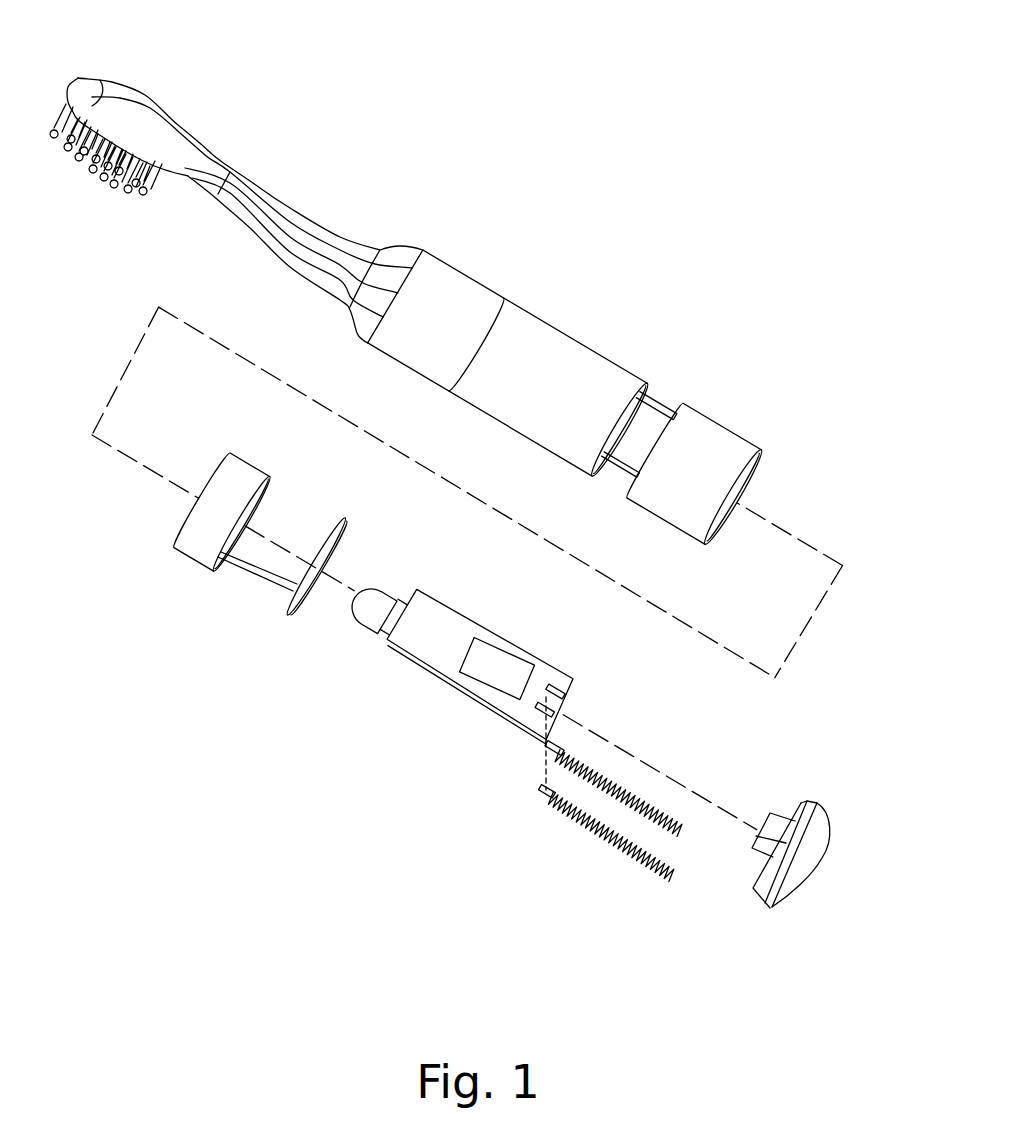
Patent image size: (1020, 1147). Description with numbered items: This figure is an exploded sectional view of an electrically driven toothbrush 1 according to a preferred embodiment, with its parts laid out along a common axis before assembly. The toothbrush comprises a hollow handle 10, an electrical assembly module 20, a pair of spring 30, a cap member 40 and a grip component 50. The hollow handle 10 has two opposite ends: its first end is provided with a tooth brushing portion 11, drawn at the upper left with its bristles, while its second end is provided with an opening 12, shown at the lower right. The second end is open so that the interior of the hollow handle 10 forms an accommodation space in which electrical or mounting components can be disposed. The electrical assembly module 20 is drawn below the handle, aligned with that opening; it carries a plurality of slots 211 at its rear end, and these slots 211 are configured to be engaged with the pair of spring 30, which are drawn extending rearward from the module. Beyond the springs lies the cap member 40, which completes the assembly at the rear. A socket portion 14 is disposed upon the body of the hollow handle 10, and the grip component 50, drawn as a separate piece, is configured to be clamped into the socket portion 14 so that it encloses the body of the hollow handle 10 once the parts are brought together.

The electrically driven toothbrush 1 is at (460, 273).
The hollow handle 10 is at (457, 284).
The tooth brushing portion 11 is at (147, 113).
The opening 12 is at (761, 489).
The socket portion 14 is at (652, 418).
The electrical assembly module 20 is at (507, 659).
The slots 211 is at (563, 683).
The pair of spring 30 is at (597, 867).
The cap member 40 is at (793, 877).
The grip component 50 is at (203, 553).